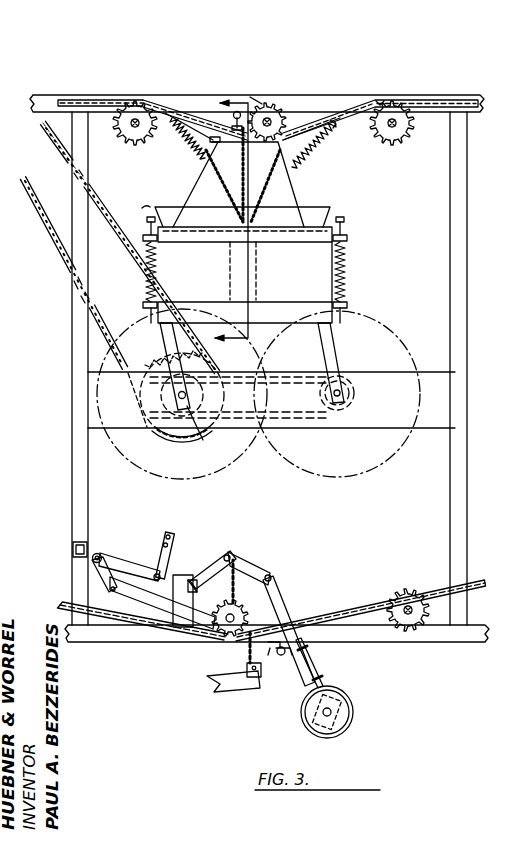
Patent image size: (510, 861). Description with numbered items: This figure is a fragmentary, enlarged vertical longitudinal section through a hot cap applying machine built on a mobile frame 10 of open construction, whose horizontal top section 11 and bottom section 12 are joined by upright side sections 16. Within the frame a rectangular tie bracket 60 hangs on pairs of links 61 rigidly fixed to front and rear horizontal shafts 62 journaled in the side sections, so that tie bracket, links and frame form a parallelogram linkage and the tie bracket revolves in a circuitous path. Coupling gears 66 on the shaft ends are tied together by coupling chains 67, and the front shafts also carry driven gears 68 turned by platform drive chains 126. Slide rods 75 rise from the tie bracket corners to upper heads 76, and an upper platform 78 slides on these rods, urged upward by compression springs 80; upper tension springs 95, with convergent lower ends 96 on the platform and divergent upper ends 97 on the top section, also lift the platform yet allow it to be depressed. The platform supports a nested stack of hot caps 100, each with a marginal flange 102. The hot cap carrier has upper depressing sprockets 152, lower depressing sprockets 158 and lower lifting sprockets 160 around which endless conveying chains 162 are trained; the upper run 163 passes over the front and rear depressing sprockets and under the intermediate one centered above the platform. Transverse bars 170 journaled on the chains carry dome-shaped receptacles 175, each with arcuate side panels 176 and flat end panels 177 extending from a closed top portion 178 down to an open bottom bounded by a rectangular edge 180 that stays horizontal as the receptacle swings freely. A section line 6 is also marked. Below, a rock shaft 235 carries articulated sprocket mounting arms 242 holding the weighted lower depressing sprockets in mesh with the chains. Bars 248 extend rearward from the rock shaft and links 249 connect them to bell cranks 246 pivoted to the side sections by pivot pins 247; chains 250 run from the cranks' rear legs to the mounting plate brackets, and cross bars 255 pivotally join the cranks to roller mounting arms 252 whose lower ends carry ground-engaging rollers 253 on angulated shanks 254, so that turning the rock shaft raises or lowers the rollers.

The mobile frame 10 is at (27, 90).
The top section 11 is at (68, 95).
The bottom section 12 is at (128, 632).
The side section 16 is at (88, 310).
The platform drive chains 126 is at (37, 205).
The upper depressing sprockets 152 is at (135, 120).
The lower depressing sprockets 158 is at (221, 632).
The lower lifting sprockets 160 is at (415, 624).
The conveying chains 162 is at (422, 102).
The upper longitudinal run 163 is at (380, 95).
The bars 170 is at (256, 105).
The hot cap holding receptacles 175 is at (206, 140).
The arcuate side panels 176 is at (278, 176).
The end panels 177 is at (203, 163).
The closed top portion 178 is at (215, 137).
The section line 6- 6 is at (239, 214).
The upper tension springs 95 is at (202, 164).
The convergent lower ends 96 is at (251, 228).
The divergent upper ends 97 is at (334, 123).
The hot caps 100 is at (291, 221).
The marginal flange 102 is at (330, 213).
The upper heads 76 is at (148, 220).
The slide rods 75 is at (147, 265).
The lower compression springs 80 is at (147, 288).
The upper platform 78 is at (193, 235).
The rectangular edge 180 is at (234, 271).
The tie bracket 60 is at (279, 315).
The links 61 is at (333, 350).
The horizontal shafts 62 is at (185, 393).
The coupling gears 66 is at (376, 390).
The coupling chains 67 is at (279, 440).
The driven gears 68 is at (160, 362).
The rock shaft 235 is at (101, 556).
The sprocket mounting arms 242 is at (145, 597).
The bell cranks 246 is at (197, 572).
The pivot pins 247 is at (197, 627).
The bars 248 is at (118, 558).
The links 249 is at (160, 572).
The chains 250 is at (247, 677).
The roller mounting arms 252 is at (257, 573).
The rollers 253 is at (307, 705).
The angulated shanks 254 is at (316, 664).
The cross bars 255 is at (240, 560).